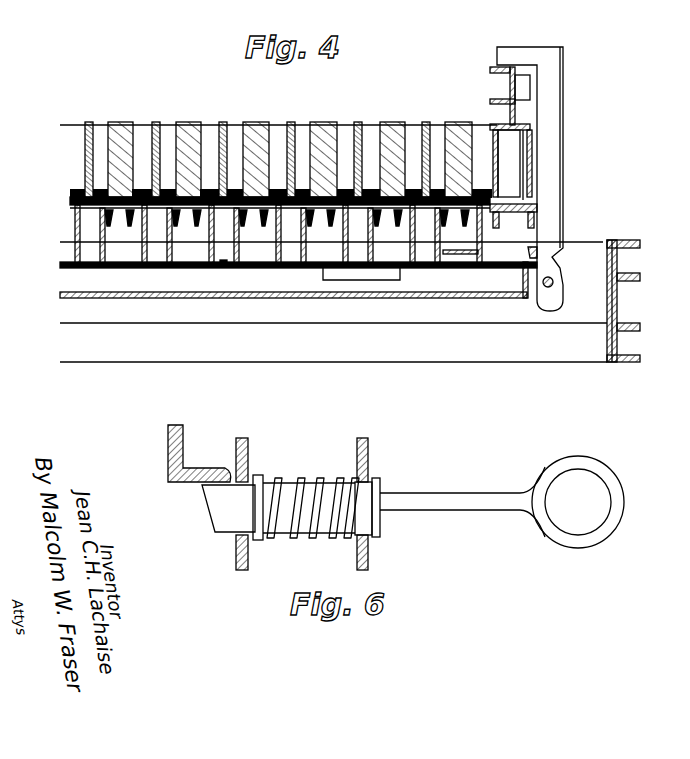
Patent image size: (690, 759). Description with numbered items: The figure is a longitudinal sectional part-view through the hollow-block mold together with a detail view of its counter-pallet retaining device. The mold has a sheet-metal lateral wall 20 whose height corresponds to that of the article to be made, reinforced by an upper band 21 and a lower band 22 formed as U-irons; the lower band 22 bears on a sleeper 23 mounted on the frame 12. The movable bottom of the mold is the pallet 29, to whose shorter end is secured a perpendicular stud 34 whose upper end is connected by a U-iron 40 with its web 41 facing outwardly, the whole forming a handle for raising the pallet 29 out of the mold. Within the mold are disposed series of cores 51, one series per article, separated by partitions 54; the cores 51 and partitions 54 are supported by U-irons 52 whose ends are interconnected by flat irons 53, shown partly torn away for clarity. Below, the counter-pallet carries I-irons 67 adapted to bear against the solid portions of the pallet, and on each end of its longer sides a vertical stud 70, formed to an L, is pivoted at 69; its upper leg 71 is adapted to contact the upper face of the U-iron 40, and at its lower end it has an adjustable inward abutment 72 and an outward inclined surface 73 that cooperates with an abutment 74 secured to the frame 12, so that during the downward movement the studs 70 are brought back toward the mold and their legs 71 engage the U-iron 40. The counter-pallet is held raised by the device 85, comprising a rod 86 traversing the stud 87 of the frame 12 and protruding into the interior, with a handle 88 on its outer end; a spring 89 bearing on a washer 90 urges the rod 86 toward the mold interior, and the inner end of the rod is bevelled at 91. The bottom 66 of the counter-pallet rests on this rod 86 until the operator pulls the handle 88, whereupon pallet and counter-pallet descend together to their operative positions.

In FIG. 4, the partition 54 is at (155, 122).
In FIG. 4, the core 51 is at (257, 122).
In FIG. 4, the pallet 29 is at (372, 193).
In FIG. 4, the stud 34 is at (500, 114).
In FIG. 4, the U-iron 40 is at (498, 72).
In FIG. 4, the web 41 is at (511, 92).
In FIG. 4, the upper leg 71 is at (530, 47).
In FIG. 4, the upper band 21 is at (530, 125).
In FIG. 4, the lateral wall 20 is at (493, 162).
In FIG. 4, the vertical stud 70 is at (552, 170).
In FIG. 4, the lower band 22 is at (535, 193).
In FIG. 4, the sleeper 23 is at (530, 217).
In FIG. 4, the adjustable inward abutment 72 is at (537, 248).
In FIG. 4, the inclined surface 73 is at (562, 253).
In FIG. 4, the abutment 74 is at (588, 252).
In FIG. 4, the frame 12 is at (617, 300).
In FIG. 4, the pivot 69 is at (553, 283).
In FIG. 4, the I-iron 67 is at (460, 252).
In FIG. 4, the bottom 66 is at (443, 278).
In FIG. 6, the bottom 66 is at (168, 466).
In FIG. 4, the U-iron 52 is at (188, 208).
In FIG. 4, the device 85 is at (223, 210).
In FIG. 4, the flat iron 53 is at (260, 208).
In FIG. 6, the washer 90 is at (260, 478).
In FIG. 6, the spring 89 is at (297, 484).
In FIG. 6, the bevelled end 91 is at (218, 514).
In FIG. 6, the rod 86 is at (276, 536).
In FIG. 6, the stud 87 is at (238, 560).
In FIG. 6, the handle 88 is at (565, 520).